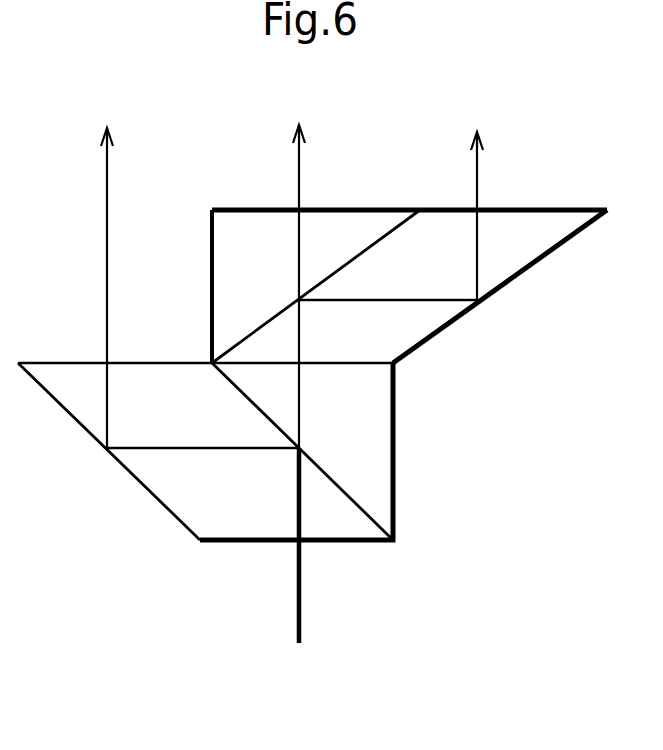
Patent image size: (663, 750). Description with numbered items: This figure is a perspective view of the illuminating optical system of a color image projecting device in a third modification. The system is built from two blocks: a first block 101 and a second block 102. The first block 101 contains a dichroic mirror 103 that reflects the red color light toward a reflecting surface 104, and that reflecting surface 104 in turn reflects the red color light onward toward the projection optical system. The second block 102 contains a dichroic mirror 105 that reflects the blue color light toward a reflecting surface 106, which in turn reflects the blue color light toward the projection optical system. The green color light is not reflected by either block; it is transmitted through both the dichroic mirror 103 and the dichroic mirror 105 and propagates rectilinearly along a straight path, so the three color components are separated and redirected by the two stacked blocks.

The first block 101 is at (393, 432).
The second block 102 is at (248, 209).
The dichroic mirror 103 is at (352, 500).
The reflecting surface 104 is at (143, 488).
The dichroic mirror 105 is at (362, 252).
The reflecting surface 106 is at (535, 264).